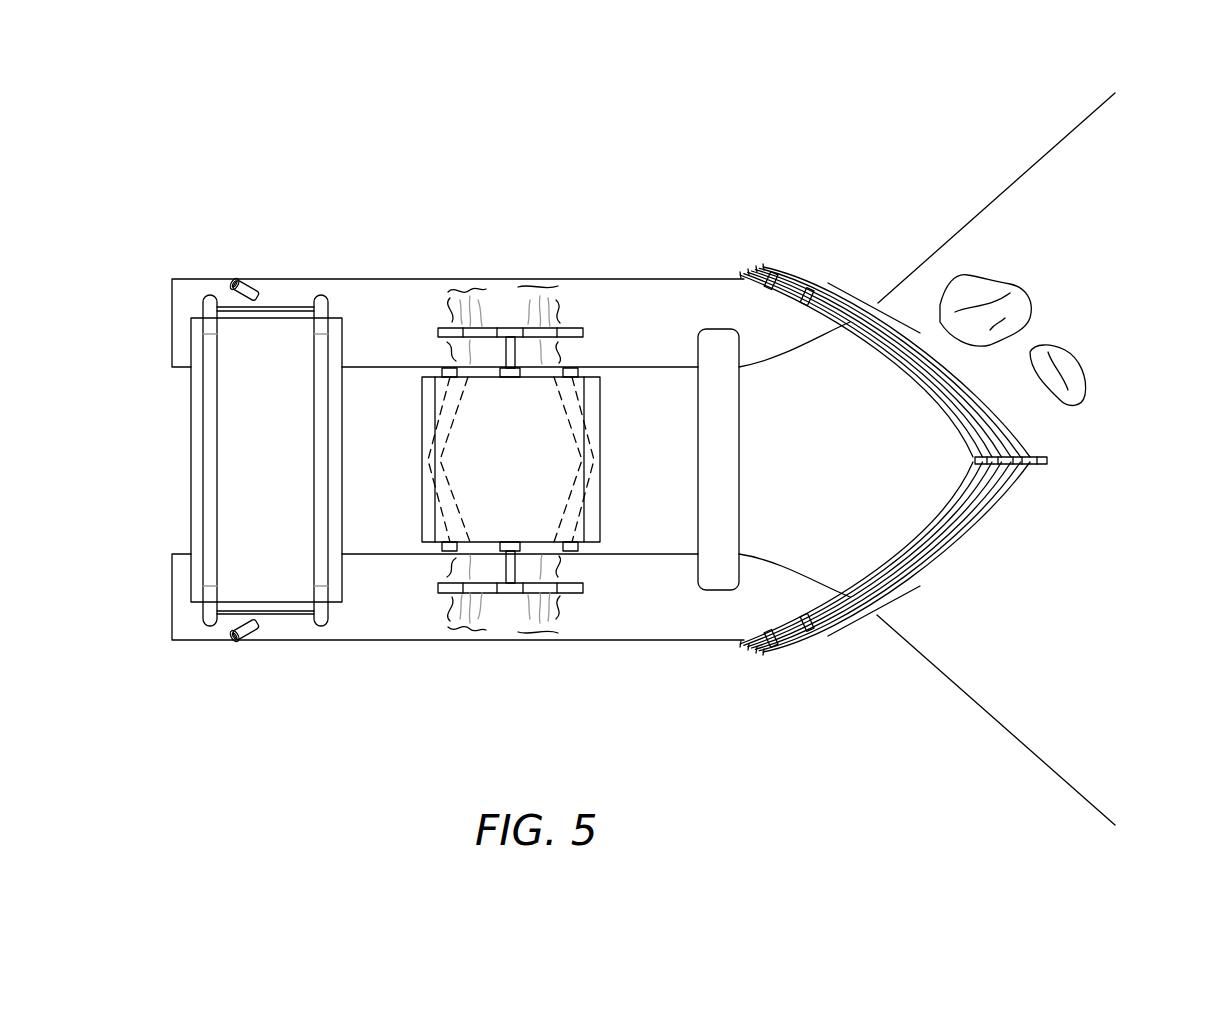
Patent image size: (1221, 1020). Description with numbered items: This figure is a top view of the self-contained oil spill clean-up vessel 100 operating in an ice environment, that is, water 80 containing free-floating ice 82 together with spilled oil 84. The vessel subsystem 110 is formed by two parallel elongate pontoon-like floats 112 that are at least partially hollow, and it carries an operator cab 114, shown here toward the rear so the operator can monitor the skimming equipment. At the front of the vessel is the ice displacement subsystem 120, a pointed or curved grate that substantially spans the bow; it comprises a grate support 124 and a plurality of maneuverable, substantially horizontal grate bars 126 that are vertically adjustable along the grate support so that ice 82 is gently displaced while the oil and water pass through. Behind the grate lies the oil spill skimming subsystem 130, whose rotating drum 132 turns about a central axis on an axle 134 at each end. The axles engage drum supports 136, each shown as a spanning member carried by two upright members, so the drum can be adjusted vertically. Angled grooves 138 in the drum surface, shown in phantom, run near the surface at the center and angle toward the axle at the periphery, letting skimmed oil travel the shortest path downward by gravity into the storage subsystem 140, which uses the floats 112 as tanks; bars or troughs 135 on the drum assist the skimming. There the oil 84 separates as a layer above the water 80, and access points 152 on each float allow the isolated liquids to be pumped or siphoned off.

The self-contained oil spill clean-up vessel 100 is at (746, 120).
The vessel subsystem 110 is at (407, 685).
The pontoon-like floats 112 is at (648, 355).
The operator cab 114 is at (279, 335).
The ice displacement subsystem 120 is at (1073, 450).
The grate support 124 is at (1047, 461).
The grate bars 126 is at (975, 526).
The oil spill skimming subsystem 130 is at (590, 378).
The rotating drum 132 is at (550, 470).
The axle 134 is at (505, 352).
The bars or troughs 135 is at (592, 524).
The drum supports 136 is at (575, 318).
The angled grooves 138 is at (420, 380).
The storage subsystem 140 is at (678, 630).
The access points 152 is at (239, 276).
The water 80 is at (1123, 595).
The free-floating ice 82 is at (1015, 285).
The oil 84 is at (1201, 585).